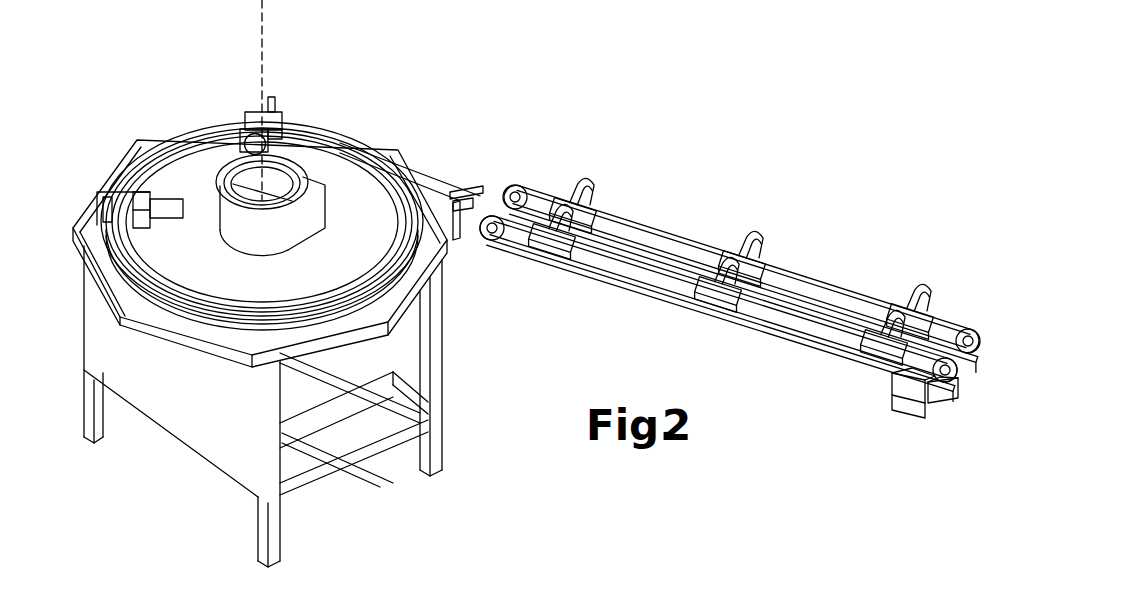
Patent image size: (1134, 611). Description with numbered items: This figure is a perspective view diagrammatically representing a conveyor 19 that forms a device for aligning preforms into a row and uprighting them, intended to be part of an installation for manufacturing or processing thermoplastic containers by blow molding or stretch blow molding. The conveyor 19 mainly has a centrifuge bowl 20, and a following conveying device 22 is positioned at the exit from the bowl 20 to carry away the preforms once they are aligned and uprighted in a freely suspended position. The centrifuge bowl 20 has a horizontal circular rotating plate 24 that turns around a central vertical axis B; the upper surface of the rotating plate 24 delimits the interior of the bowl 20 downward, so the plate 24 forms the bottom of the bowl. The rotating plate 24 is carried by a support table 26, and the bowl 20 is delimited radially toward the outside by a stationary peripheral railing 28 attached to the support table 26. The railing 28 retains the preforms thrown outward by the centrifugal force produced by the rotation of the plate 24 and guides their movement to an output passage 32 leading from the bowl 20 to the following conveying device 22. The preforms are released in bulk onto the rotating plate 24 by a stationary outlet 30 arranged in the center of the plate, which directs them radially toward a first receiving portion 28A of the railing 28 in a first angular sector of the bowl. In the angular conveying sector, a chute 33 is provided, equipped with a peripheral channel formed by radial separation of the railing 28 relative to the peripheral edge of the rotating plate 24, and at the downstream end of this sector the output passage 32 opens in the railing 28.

The conveyor 19 is at (480, 132).
The centrifuge bowl 20 is at (274, 271).
The following conveying device 22 is at (699, 215).
The rotating plate 24 is at (207, 275).
The support table 26 is at (436, 347).
The peripheral railing 28 is at (209, 311).
The first receiving portion 28A is at (304, 158).
The outlet 30 is at (240, 188).
The output passage 32 is at (291, 136).
The chute 33 is at (158, 282).
The central vertical axis B is at (262, 6).